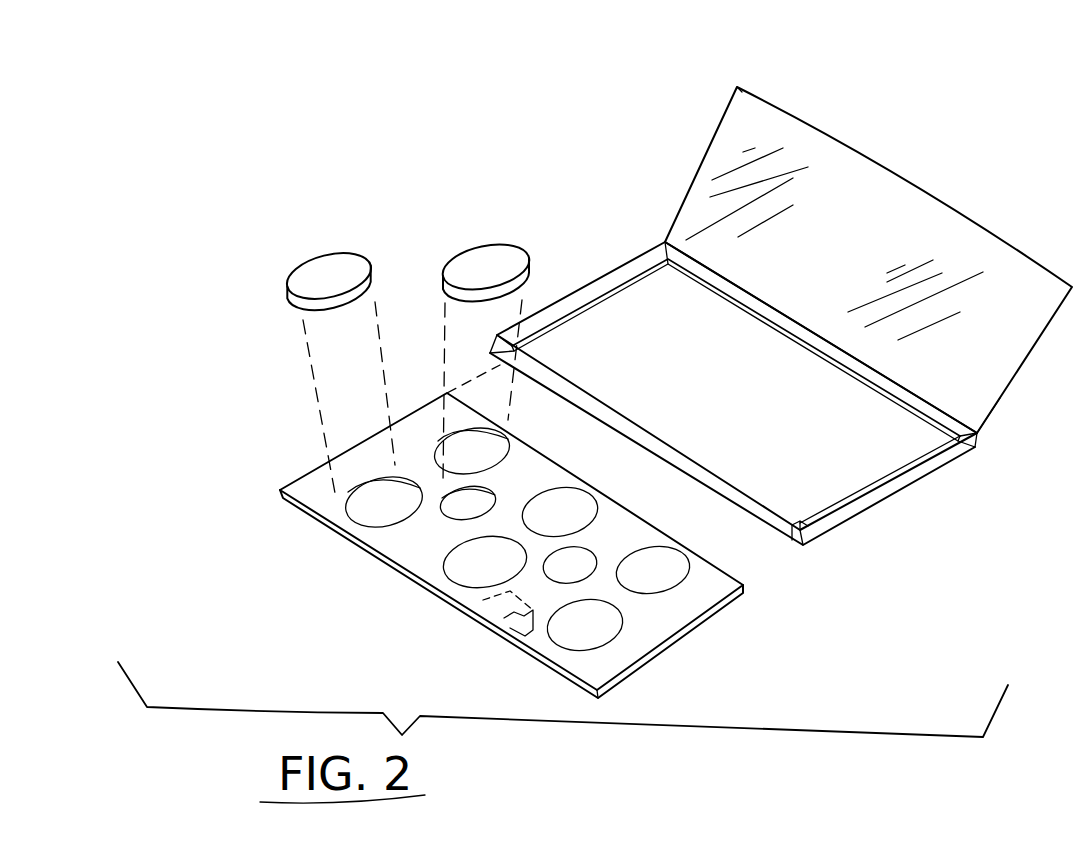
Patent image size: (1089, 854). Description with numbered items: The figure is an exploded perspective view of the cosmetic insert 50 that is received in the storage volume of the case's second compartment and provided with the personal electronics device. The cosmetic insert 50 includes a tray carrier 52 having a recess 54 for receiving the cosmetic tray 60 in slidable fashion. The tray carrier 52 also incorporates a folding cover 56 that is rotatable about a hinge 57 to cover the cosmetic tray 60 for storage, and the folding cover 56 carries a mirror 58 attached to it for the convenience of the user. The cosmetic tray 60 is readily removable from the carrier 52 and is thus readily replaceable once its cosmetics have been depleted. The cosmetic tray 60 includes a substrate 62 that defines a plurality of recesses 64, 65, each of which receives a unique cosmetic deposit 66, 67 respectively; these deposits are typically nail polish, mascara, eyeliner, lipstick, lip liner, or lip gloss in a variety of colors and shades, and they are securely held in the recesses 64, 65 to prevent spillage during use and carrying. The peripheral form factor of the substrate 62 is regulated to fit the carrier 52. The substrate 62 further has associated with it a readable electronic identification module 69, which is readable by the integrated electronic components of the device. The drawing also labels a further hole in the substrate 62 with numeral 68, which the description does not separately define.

The cosmetic insert 50 is at (531, 104).
The tray carrier 52 is at (893, 497).
The recess 54 is at (793, 543).
The folding cover 56 is at (700, 152).
The hinge 57 is at (977, 433).
The mirror 58 is at (867, 212).
The cosmetic tray 60 is at (303, 470).
The substrate 62 is at (673, 637).
The recess 64 is at (342, 513).
The recess 65 is at (442, 508).
The cosmetic deposit 66 is at (354, 252).
The cosmetic deposit 67 is at (462, 248).
The third receptacle hole 68 is at (470, 565).
The readable electronic identification module 69 is at (517, 633).